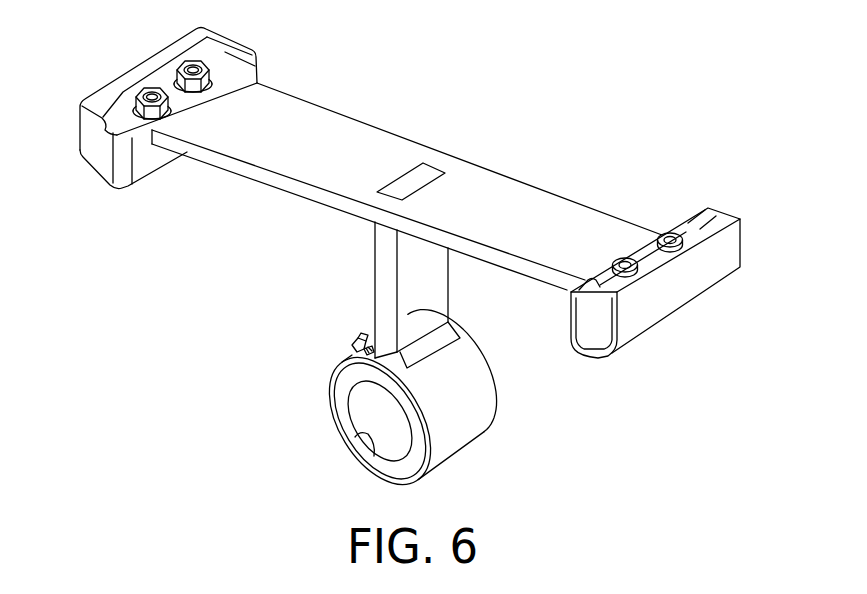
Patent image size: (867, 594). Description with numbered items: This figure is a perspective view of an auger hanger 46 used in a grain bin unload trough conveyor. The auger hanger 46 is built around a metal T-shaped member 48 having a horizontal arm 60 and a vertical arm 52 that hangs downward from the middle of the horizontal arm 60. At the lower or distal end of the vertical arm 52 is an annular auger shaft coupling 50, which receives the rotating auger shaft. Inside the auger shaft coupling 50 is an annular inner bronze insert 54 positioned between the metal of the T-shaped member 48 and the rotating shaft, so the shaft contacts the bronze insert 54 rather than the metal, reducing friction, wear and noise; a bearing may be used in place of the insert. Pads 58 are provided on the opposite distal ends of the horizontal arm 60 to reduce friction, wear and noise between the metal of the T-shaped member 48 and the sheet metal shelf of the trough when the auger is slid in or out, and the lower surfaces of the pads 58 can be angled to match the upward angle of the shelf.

The auger hanger 46 is at (528, 80).
The T-shaped member 48 is at (369, 227).
The auger shaft coupling 50 is at (328, 409).
The vertical arm 52 is at (384, 303).
The bronze insert 54 is at (373, 457).
The pads 58 is at (107, 166).
The horizontal arm 60 is at (303, 130).